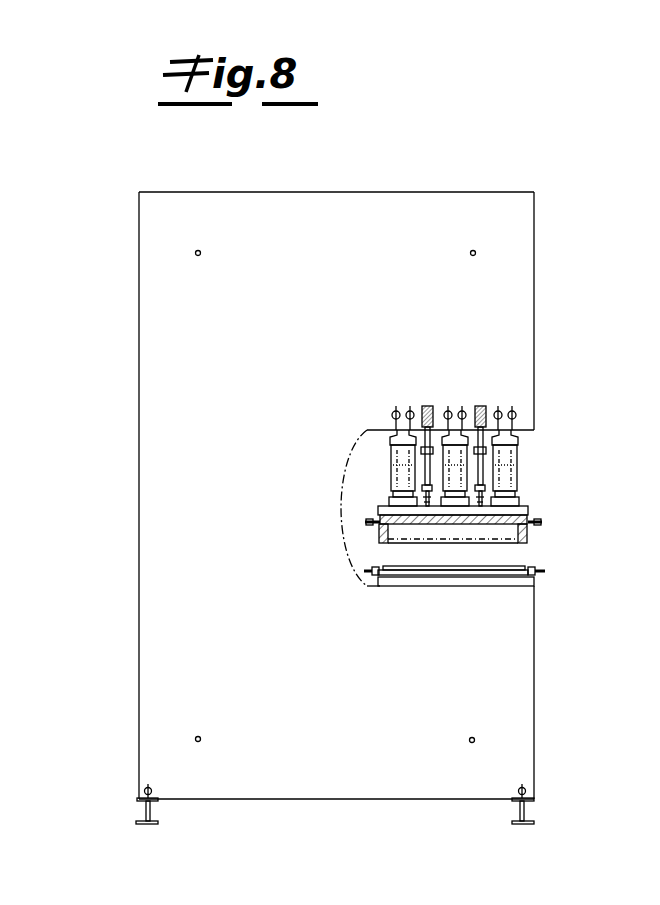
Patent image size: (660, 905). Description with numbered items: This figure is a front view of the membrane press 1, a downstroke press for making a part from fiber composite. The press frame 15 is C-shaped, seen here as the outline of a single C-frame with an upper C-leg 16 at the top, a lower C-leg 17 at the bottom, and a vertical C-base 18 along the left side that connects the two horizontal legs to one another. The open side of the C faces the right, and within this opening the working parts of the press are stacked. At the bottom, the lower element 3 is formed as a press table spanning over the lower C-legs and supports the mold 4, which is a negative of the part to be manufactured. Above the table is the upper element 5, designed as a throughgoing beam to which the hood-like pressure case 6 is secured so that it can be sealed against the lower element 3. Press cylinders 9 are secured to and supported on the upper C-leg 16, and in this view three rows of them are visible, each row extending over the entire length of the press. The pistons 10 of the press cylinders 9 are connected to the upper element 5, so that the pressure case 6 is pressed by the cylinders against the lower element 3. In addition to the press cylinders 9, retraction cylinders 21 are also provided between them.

The membrane press 1 is at (538, 159).
The lower element 3 is at (542, 582).
The mold 4 is at (529, 558).
The upper element 5 is at (531, 503).
The pressure case 6 is at (527, 532).
The press cylinder 9 is at (521, 454).
The piston 10 is at (507, 488).
The press frame 15 is at (117, 766).
The upper C-leg 16 is at (418, 224).
The lower C-leg 17 is at (406, 765).
The vertical C-base 18 is at (212, 519).
The retraction cylinder 21 is at (427, 467).